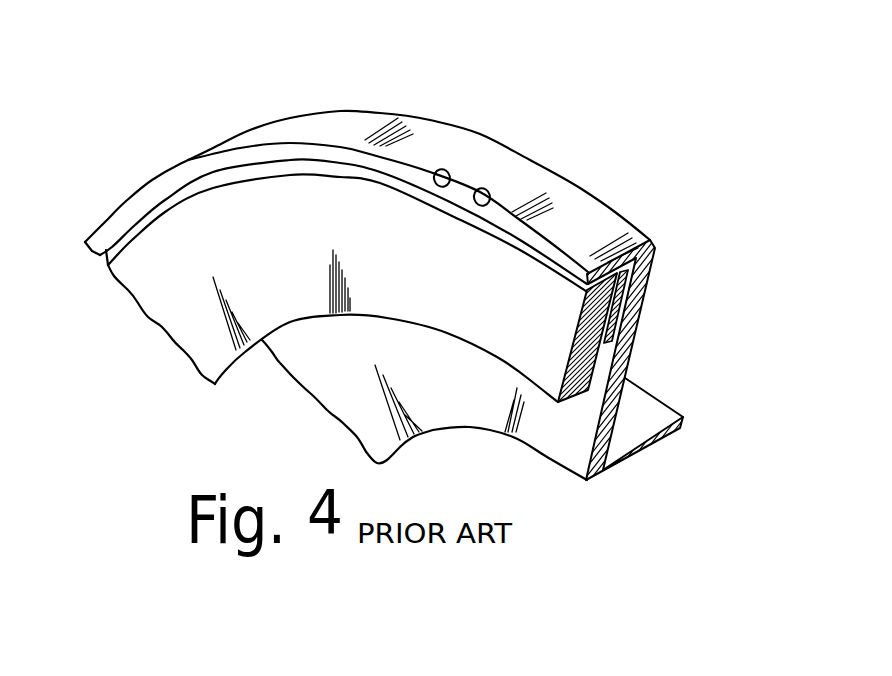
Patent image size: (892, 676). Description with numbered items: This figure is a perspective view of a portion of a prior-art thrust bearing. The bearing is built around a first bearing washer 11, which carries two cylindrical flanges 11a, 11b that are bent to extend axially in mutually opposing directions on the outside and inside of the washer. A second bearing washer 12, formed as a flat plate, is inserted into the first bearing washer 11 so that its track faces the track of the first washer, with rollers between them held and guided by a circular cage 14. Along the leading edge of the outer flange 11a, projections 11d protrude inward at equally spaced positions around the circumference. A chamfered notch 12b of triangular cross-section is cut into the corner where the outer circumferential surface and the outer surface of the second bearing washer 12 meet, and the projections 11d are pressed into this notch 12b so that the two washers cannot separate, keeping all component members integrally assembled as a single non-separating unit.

The first bearing washer 11 is at (474, 135).
The cylindrical flange 11a is at (542, 208).
The cylindrical flange 11b is at (636, 427).
The projections 11d is at (478, 208).
The second bearing washer 12 is at (347, 283).
The notch 12b is at (530, 249).
The cage 14 is at (624, 286).